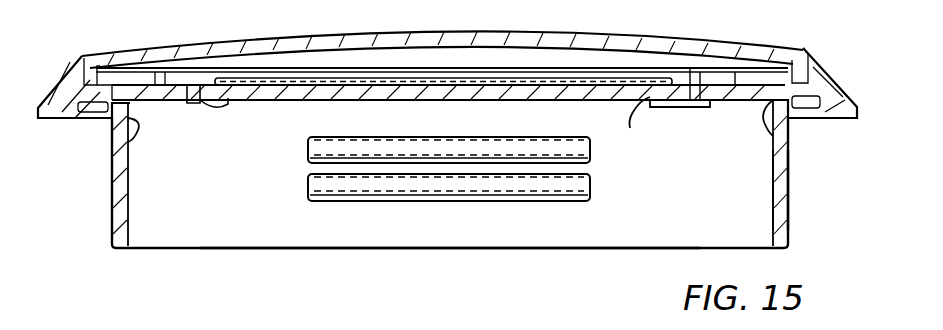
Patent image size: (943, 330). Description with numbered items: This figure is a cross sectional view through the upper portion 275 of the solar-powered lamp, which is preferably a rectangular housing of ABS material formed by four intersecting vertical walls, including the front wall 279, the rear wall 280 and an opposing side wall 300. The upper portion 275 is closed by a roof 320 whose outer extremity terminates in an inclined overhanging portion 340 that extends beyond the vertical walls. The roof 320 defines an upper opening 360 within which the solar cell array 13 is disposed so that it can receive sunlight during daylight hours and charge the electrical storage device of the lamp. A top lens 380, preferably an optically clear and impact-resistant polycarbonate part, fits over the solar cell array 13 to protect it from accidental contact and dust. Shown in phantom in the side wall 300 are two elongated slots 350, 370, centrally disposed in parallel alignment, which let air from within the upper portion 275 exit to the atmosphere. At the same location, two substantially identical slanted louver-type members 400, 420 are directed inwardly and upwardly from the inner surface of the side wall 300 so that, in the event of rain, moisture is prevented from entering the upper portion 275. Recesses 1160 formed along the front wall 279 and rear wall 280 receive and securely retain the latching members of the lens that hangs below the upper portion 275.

The solar cell array 13 is at (285, 78).
The top lens 380 is at (163, 48).
The inclined overhanging portion 340 is at (833, 82).
The roof 320 is at (190, 72).
The upper opening 360 is at (693, 72).
The louver-type member 420 is at (308, 160).
The elongated slot 350 is at (572, 148).
The louver-type member 400 is at (308, 198).
The elongated slot 370 is at (590, 180).
The rear wall 280 is at (110, 212).
The recess 1160 is at (110, 153).
The front wall 279 is at (788, 190).
The upper portion 275 is at (790, 230).
The side wall 300 is at (573, 238).